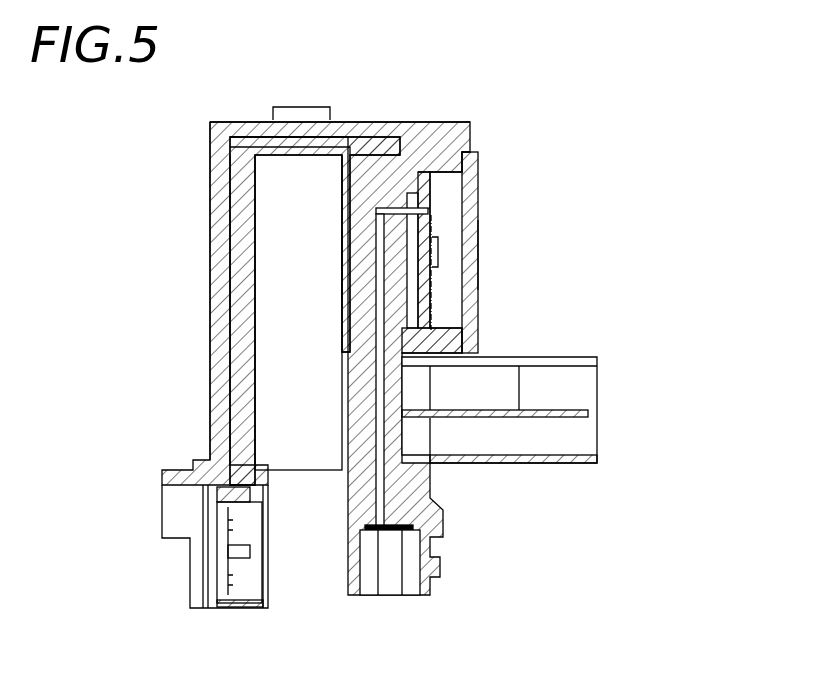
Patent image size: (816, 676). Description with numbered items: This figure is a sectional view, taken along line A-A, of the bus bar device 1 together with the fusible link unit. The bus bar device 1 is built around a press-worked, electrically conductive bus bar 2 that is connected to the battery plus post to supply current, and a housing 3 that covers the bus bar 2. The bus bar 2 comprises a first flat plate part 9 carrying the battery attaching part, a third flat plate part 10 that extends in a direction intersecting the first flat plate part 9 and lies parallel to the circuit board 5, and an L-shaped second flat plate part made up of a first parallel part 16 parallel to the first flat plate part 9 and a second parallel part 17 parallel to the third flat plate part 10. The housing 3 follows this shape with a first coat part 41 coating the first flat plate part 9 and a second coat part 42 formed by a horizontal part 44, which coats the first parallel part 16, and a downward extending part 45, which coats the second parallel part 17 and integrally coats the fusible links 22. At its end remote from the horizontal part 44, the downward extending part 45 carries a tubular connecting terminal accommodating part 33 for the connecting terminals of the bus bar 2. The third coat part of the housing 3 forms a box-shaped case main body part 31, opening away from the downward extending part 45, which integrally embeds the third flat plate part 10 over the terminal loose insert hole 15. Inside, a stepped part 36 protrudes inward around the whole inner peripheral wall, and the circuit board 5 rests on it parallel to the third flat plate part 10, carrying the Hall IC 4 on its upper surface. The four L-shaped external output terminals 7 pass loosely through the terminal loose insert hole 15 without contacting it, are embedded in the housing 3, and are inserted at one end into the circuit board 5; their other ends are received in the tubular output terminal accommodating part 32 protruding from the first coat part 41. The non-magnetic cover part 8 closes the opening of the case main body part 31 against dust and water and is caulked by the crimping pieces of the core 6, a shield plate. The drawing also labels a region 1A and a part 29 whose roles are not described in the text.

The bus bar device 1 is at (622, 124).
The main body assembly 1A is at (716, 108).
The bus bar 2 is at (480, 288).
The housing 3 is at (470, 131).
The Hall IC 4 is at (438, 247).
The circuit board 5 is at (440, 287).
The core 6 is at (345, 262).
The external output terminals 7 is at (378, 404).
The cover part 8 is at (479, 186).
The first flat plate part 9 is at (575, 410).
The third flat plate part 10 is at (440, 338).
The terminal loose insert hole 15 is at (345, 187).
The first parallel part 16 is at (358, 120).
The second parallel part 17 is at (212, 255).
The fusible links 22 is at (262, 497).
The cap 29 is at (300, 106).
The case main body part 31 is at (447, 158).
The output terminal accommodating part 32 is at (405, 583).
The connecting terminal accommodating part 33 is at (246, 564).
The stepped part 36 is at (418, 178).
The first coat part 41 is at (530, 378).
The second coat part 42 is at (238, 281).
The horizontal part 44 is at (231, 122).
The downward extending part 45 is at (210, 147).